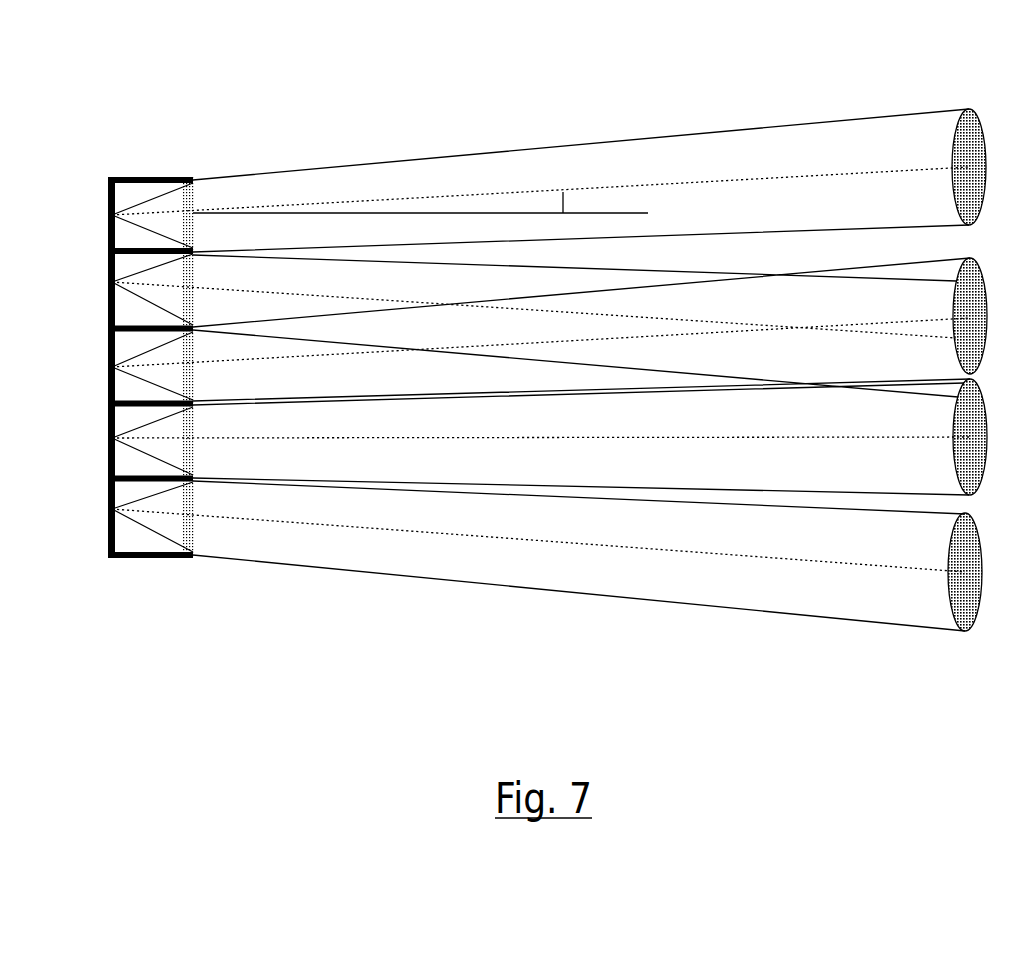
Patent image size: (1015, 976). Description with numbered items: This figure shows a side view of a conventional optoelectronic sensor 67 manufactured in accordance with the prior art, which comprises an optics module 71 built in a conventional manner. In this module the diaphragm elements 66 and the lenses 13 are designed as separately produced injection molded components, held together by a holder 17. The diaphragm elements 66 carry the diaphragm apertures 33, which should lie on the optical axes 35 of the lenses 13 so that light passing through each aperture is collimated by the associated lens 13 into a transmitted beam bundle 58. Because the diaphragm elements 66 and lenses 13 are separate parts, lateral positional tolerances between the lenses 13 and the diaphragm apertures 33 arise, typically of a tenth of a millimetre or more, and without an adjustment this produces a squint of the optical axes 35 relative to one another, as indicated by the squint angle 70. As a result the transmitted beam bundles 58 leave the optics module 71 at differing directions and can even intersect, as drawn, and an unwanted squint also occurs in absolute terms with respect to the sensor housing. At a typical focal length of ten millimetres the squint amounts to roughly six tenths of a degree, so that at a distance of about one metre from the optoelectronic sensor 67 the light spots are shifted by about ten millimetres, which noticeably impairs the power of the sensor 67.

The lens 13 is at (185, 198).
The holder 17 is at (148, 177).
The diaphragm aperture 33 is at (99, 213).
The optical axis 35 is at (740, 183).
The transmitted beam bundle 58 is at (614, 140).
The diaphragm element 66 is at (108, 494).
The optoelectronic sensor 67 is at (421, 129).
The squint angle 70 is at (537, 199).
The optics module 71 is at (147, 574).